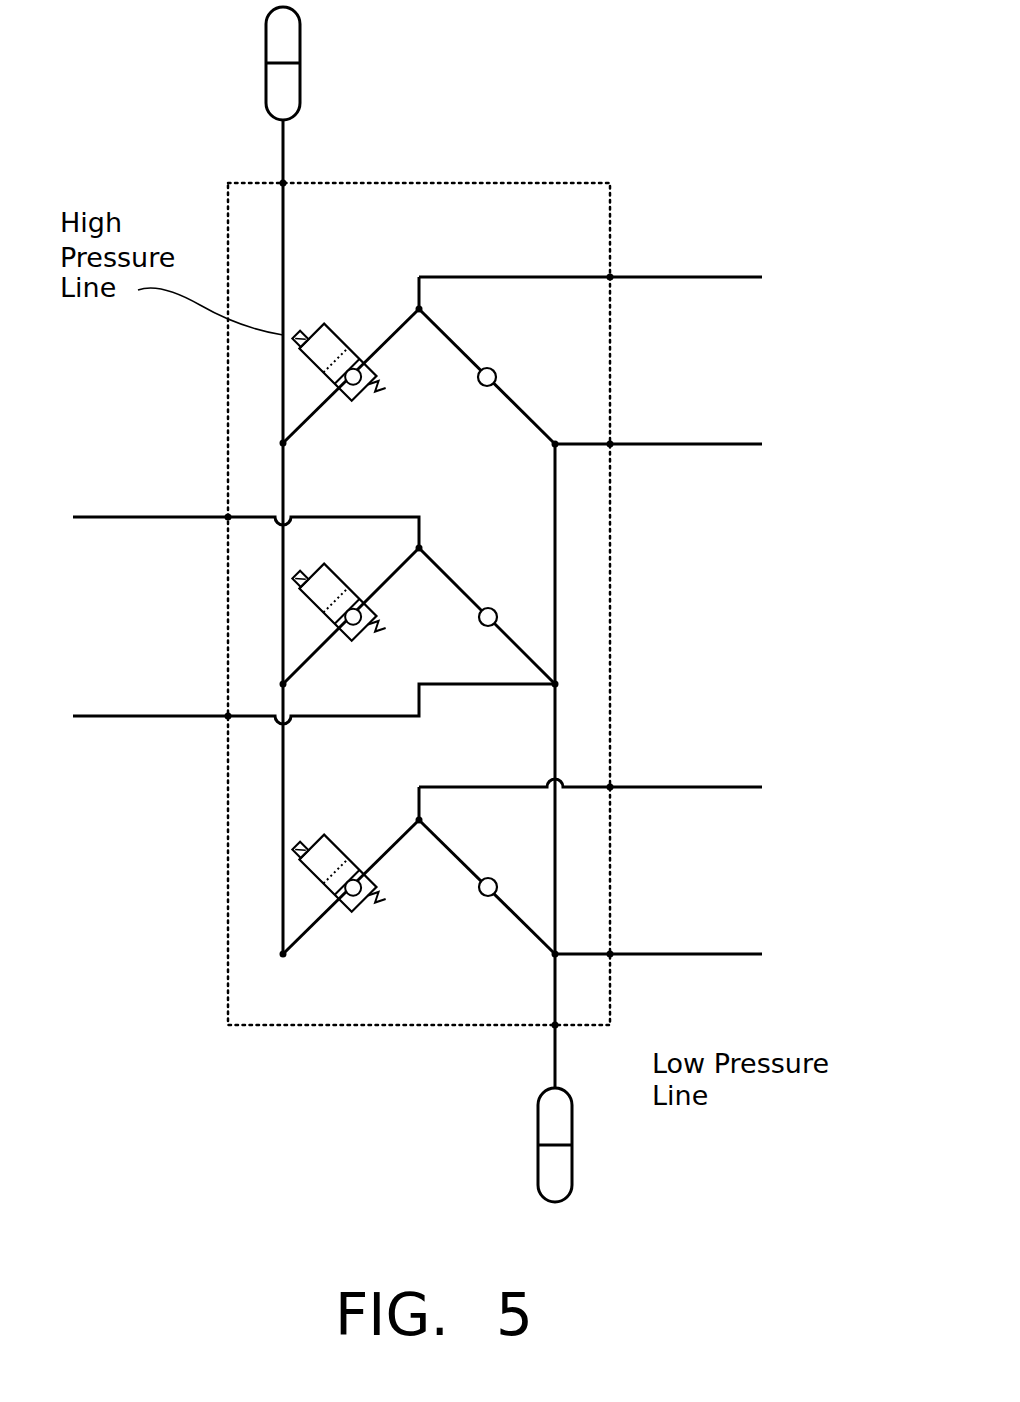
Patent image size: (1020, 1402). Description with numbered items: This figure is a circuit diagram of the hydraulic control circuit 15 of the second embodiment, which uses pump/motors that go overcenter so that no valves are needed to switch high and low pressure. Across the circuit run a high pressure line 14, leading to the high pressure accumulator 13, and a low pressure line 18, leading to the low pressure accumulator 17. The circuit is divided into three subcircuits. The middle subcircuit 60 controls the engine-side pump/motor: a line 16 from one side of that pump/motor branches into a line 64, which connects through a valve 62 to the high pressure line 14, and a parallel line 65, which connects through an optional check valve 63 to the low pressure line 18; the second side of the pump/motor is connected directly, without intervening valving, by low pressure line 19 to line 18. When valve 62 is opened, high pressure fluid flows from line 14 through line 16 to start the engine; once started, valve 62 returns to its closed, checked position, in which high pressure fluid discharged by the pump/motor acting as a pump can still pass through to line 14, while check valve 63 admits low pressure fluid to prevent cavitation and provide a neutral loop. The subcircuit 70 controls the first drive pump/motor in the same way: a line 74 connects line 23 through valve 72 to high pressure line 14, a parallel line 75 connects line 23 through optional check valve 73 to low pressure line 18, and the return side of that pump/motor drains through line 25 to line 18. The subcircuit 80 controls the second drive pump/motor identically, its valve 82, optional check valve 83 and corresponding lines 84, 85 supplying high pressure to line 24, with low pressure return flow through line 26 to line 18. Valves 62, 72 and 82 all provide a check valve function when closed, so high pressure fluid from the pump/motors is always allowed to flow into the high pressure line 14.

The high pressure accumulator 13 is at (300, 80).
The high pressure line 14 is at (283, 160).
The hydraulic control circuit 15 is at (524, 166).
The line 16 is at (100, 516).
The low pressure accumulator 17 is at (572, 1160).
The low pressure line 18 is at (558, 1045).
The low pressure line 19 is at (100, 715).
The line 23 is at (681, 276).
The line 24 is at (681, 786).
The line 25 is at (681, 443).
The line 26 is at (681, 953).
The middle subcircuit 60 is at (419, 592).
The valve 62 is at (333, 573).
The optional check valve 63 is at (495, 608).
The line 64 is at (312, 658).
The parallel line 65 is at (510, 645).
The subcircuit 70 is at (430, 370).
The valve 72 is at (322, 323).
The optional check valve 73 is at (480, 385).
The line 74 is at (308, 420).
The parallel line 75 is at (527, 420).
The subcircuit 80 is at (419, 881).
The valve 82 is at (322, 835).
The optional check valve 83 is at (483, 895).
The line 84 is at (308, 930).
The line 85 is at (527, 930).